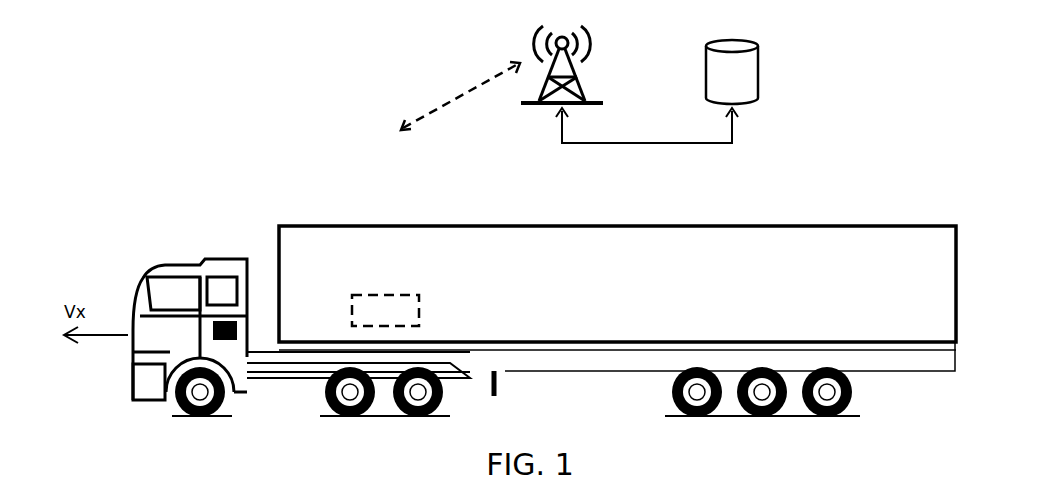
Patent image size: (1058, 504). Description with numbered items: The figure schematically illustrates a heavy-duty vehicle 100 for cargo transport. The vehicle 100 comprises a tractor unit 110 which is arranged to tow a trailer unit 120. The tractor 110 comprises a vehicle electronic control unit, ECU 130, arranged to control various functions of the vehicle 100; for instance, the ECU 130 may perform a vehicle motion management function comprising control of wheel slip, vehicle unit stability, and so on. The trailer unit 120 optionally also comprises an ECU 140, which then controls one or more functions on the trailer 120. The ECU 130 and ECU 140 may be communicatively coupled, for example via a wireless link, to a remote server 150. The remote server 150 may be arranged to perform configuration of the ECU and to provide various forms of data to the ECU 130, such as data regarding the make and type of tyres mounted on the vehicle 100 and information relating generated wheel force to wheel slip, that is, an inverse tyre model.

The heavy-duty vehicle 100 is at (132, 95).
The tractor unit 110 is at (181, 258).
The trailer unit 120 is at (467, 228).
The vehicle electronic control unit (ECU) 130 is at (237, 330).
The ECU 140 is at (385, 310).
The remote server 150 is at (759, 80).